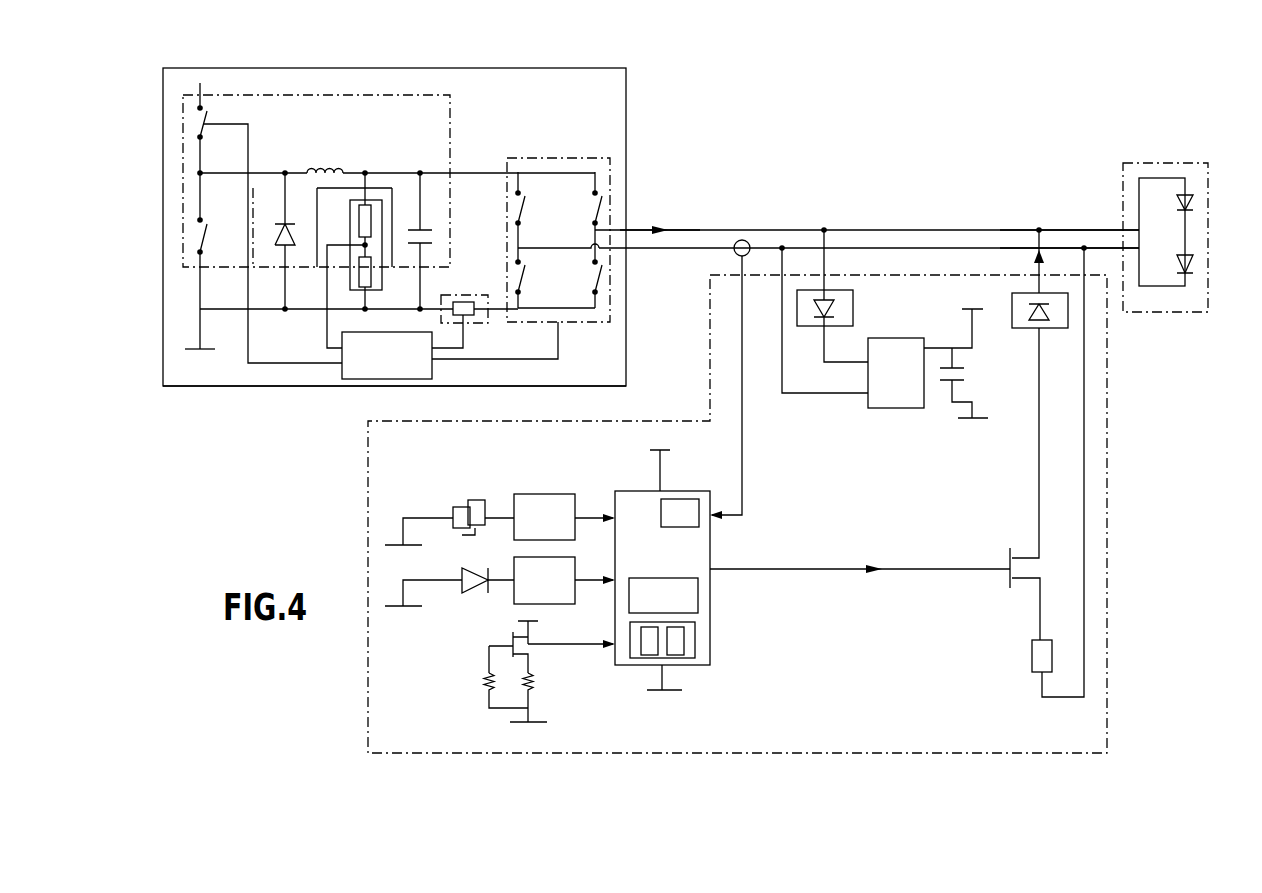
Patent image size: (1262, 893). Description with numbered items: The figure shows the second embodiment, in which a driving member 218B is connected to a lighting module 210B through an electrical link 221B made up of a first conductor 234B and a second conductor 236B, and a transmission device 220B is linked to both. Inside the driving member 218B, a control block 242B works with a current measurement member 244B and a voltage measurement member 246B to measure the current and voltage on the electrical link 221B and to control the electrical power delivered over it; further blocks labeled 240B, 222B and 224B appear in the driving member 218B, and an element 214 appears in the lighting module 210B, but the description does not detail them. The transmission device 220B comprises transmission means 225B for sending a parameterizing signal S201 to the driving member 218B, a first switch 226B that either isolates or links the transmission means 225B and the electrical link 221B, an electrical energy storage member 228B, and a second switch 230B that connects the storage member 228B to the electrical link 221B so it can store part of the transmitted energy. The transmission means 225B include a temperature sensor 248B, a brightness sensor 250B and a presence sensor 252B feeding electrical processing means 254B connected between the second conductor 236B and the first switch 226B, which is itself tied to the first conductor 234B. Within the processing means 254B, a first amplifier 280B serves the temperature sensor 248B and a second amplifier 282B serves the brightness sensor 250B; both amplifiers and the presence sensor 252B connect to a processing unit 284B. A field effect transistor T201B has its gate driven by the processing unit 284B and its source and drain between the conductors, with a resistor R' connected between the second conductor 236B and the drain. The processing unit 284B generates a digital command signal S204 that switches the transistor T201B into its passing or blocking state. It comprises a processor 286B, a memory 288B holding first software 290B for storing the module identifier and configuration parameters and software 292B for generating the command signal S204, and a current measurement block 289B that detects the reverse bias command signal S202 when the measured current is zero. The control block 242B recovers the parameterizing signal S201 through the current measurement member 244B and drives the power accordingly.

The power supply unit 240B is at (394, 215).
The driving member 218B is at (272, 390).
The converter section 222B is at (458, 138).
The switch bridge 224B is at (585, 150).
The control block 242B is at (450, 347).
The current measurement member 244B is at (471, 290).
The voltage measurement member 246B is at (375, 260).
The electrical link 221B is at (937, 197).
The first conductor 234B is at (1013, 224).
The second conductor 236B is at (1090, 224).
The lighting module 210B is at (1164, 150).
The light emitting diodes 214 is at (1197, 262).
The transmission device 220B is at (1110, 500).
The second switch 230B is at (856, 303).
The electrical energy storage member 228B is at (862, 430).
The first switch 226B is at (1016, 332).
The transmission means 225B is at (1015, 484).
The field effect transistor T201B is at (1047, 484).
The resistor R' is at (1038, 472).
The parameterizing signal S201 is at (1020, 261).
The reverse bias command signal S202 is at (674, 217).
The digital command signal S204 is at (860, 558).
The electrical processing means 254B is at (655, 562).
The processing unit 284B is at (662, 546).
The processor 286B is at (663, 595).
The memory 288B is at (684, 661).
The current measurement block 289B is at (692, 492).
The first software 290B is at (630, 663).
The software for generating a digital command signal 292B is at (704, 663).
The first amplifier 280B is at (564, 517).
The second amplifier 282B is at (564, 580).
The temperature sensor 248B is at (450, 503).
The brightness sensor 250B is at (466, 600).
The presence sensor 252B is at (550, 695).